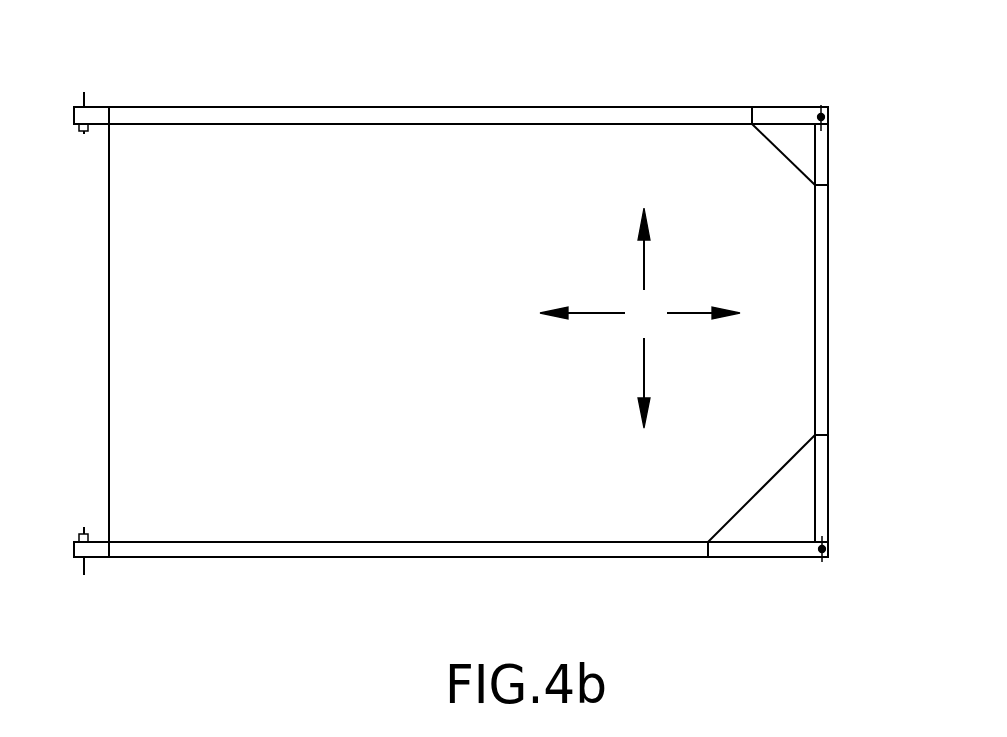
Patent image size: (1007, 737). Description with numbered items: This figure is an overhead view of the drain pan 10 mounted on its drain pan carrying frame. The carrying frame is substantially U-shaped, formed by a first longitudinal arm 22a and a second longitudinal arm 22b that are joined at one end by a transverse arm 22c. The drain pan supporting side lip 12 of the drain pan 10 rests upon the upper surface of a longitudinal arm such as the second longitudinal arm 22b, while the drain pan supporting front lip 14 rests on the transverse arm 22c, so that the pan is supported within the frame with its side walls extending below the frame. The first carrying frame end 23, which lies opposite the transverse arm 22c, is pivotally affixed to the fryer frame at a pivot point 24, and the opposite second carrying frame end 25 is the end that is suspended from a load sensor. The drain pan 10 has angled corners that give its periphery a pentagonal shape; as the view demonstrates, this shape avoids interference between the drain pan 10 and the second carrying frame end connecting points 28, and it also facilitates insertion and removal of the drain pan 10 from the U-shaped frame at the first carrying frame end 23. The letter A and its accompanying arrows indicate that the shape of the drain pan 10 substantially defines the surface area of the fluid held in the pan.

The drain pan 10 is at (423, 345).
The drain pan supporting side lip 12 is at (235, 107).
The drain pan supporting front lip 14 is at (830, 375).
The first longitudinal arm 22a is at (790, 108).
The second longitudinal arm 22b is at (784, 558).
The transverse arm 22c is at (828, 163).
The first carrying frame end 23 is at (109, 582).
The pivot point 24 is at (68, 524).
The second carrying frame end 25 is at (848, 476).
The second carrying frame end connecting points 28 is at (822, 560).
The fluid surface area indicator A is at (640, 318).